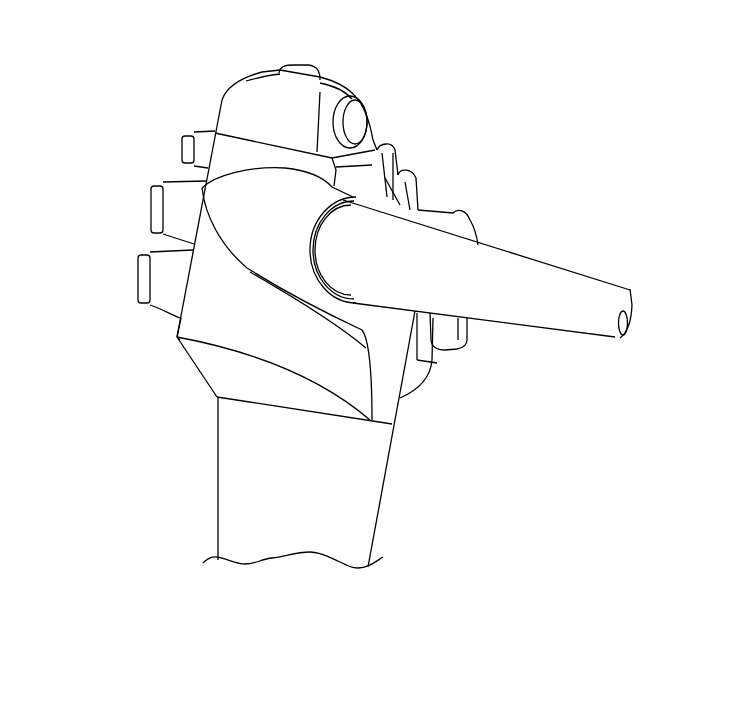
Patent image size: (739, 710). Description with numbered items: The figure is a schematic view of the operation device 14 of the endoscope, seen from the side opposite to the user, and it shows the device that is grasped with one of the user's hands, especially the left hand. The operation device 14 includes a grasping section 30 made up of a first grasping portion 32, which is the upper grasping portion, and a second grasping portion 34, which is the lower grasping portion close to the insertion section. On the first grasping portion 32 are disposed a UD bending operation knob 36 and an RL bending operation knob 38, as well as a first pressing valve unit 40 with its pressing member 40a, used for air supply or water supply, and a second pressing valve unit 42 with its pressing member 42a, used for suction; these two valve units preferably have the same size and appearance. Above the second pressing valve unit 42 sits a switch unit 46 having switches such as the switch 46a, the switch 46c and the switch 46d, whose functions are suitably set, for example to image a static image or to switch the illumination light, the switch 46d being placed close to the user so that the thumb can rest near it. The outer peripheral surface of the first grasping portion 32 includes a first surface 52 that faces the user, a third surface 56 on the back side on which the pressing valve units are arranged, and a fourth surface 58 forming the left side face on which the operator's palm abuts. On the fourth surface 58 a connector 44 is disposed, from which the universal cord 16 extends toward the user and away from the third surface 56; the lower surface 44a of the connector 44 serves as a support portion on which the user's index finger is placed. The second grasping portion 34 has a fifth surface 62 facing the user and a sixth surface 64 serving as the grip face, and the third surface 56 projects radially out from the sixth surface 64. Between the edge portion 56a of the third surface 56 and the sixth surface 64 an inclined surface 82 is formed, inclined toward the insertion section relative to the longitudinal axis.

The operation device 14 is at (107, 403).
The universal cord 16 is at (552, 270).
The grasping section 30 is at (402, 438).
The first grasping portion 32 is at (167, 323).
The second grasping portion 34 is at (365, 528).
The UD bending operation knob 36 is at (437, 220).
The RL bending operation knob 38 is at (460, 327).
The first pressing valve unit 40 is at (126, 265).
The pressing member 40a is at (138, 283).
The second pressing valve unit 42 is at (137, 212).
The pressing member 42a is at (152, 194).
The connector 44 is at (240, 253).
The lower surface 44a is at (303, 297).
The switch unit 46 is at (364, 81).
The switch 46a is at (182, 144).
The switch 46c is at (300, 73).
The switch 46d is at (357, 110).
The first surface 52 is at (387, 412).
The third surface 56 is at (187, 245).
The edge portion 56a is at (172, 337).
The fourth surface 58 is at (200, 325).
The fifth surface 62 is at (382, 495).
The sixth surface 64 is at (218, 483).
The inclined surface 82 is at (205, 380).